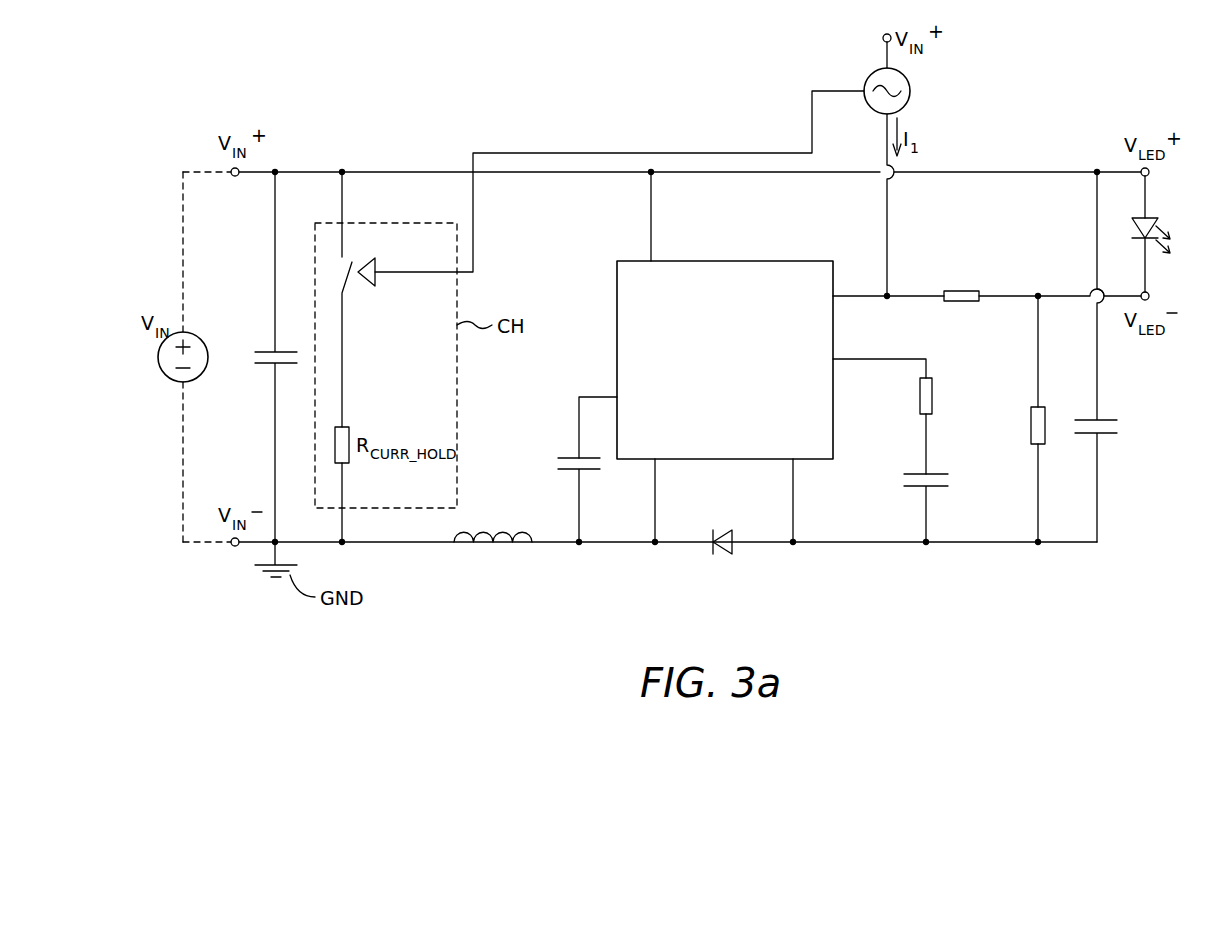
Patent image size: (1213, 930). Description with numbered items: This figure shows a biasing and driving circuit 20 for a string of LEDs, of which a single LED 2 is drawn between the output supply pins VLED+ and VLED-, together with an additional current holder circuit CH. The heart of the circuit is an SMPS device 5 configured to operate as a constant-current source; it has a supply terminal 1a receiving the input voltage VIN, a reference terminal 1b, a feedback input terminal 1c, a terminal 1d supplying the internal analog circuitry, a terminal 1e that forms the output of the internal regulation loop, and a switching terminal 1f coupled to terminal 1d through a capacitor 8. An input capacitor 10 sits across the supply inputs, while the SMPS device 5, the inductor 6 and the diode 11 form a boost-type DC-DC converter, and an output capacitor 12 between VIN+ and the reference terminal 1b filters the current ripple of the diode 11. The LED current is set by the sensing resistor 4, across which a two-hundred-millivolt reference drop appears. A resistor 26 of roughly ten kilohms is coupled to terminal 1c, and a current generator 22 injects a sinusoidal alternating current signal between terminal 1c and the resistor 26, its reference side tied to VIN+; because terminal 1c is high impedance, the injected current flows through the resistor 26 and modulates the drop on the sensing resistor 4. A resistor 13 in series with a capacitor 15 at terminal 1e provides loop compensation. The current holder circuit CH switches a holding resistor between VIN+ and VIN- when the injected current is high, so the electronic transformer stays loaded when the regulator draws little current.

The biasing and driving circuit 20 is at (566, 98).
The current generator 22 is at (911, 92).
The input capacitor 10 is at (270, 351).
The SMPS device 5 is at (736, 280).
The supply terminal 1a is at (650, 256).
The reference terminal 1b is at (794, 468).
The feedback input terminal 1c is at (837, 296).
The terminal 1d is at (614, 395).
The terminal 1e is at (836, 359).
The terminal 1f is at (654, 468).
The resistor 26 is at (962, 291).
The resistor 13 is at (916, 398).
The capacitor 15 is at (937, 488).
The capacitor 8 is at (567, 456).
The diode 11 is at (714, 556).
The inductor 6 is at (504, 545).
The sensing resistor 4 is at (1032, 408).
The output capacitor 12 is at (1107, 422).
The LED 2 is at (1152, 222).